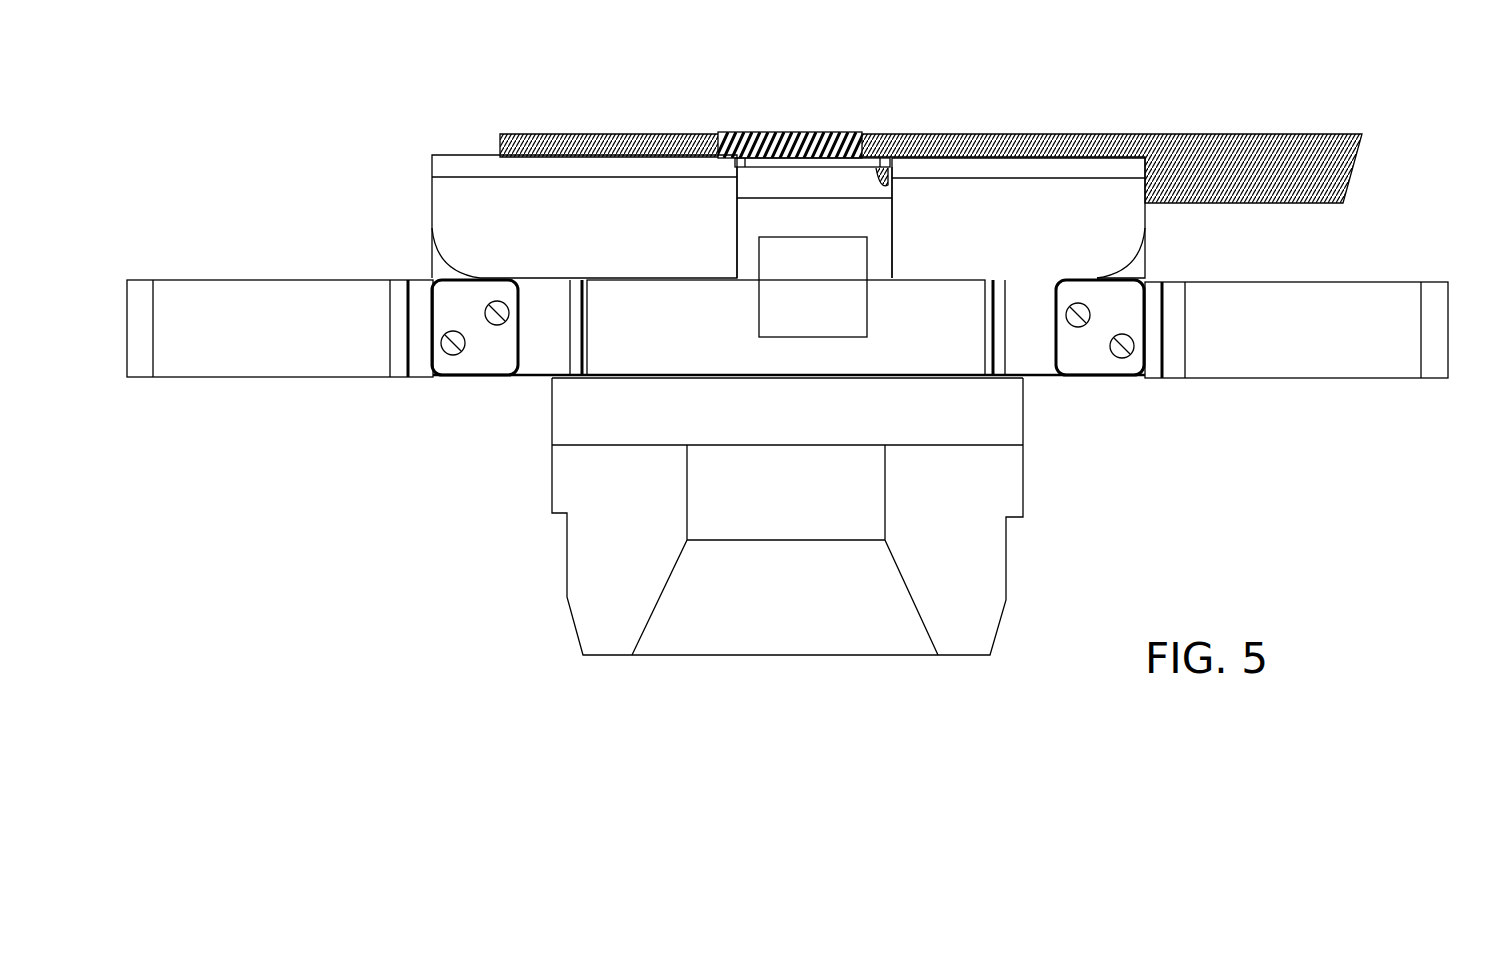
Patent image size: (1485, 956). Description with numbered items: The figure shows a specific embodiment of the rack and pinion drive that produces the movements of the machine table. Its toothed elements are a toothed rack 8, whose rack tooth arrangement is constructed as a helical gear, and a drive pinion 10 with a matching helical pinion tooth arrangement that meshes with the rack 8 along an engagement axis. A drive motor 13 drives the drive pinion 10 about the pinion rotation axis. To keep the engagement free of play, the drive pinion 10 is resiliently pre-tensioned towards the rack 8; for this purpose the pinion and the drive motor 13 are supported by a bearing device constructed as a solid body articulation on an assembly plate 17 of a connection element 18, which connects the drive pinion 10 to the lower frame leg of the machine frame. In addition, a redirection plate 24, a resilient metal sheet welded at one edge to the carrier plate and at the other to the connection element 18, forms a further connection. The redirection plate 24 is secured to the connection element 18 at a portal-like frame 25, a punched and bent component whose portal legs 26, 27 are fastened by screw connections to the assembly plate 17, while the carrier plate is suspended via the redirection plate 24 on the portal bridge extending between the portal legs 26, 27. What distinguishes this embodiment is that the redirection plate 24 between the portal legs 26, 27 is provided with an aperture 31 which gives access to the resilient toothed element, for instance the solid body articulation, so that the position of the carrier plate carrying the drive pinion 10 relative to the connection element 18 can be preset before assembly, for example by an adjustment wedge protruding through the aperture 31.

The toothed rack 8 is at (1214, 119).
The drive pinion 10 is at (799, 121).
The drive motor 13 is at (605, 557).
The assembly plate 17 is at (292, 353).
The connection element 18 is at (768, 184).
The redirection plate 24 is at (640, 340).
The portal-like frame 25 is at (420, 226).
The portal leg 26 is at (430, 268).
The portal leg 27 is at (1135, 268).
The aperture 31 is at (845, 307).